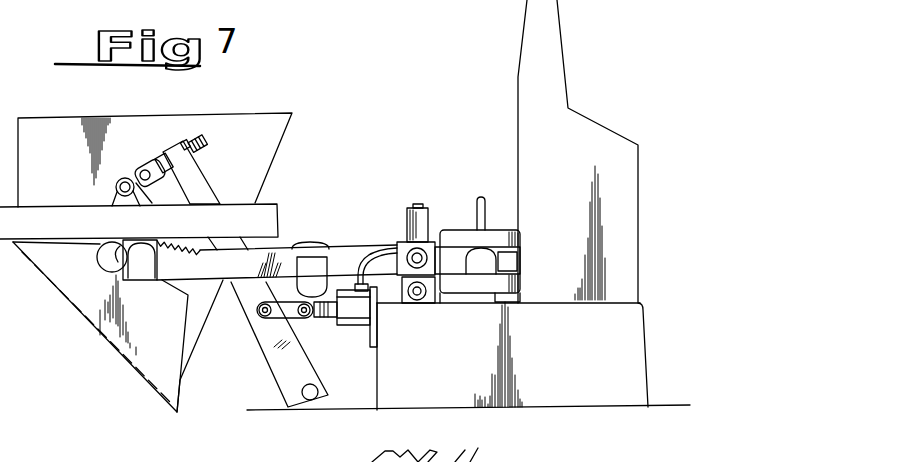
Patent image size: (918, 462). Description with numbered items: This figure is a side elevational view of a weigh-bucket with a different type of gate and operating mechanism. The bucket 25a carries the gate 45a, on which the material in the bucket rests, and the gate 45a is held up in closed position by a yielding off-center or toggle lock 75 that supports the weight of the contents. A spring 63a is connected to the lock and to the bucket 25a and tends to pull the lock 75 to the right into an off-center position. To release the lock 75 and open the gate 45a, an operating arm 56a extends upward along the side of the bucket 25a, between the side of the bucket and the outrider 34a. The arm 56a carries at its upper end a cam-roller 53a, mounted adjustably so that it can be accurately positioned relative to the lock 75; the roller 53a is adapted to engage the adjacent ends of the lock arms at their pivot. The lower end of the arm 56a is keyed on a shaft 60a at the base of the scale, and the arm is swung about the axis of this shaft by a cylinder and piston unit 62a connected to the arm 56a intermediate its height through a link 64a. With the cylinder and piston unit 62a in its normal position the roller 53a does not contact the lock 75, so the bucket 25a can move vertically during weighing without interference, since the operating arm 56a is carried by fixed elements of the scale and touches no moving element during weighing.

The bucket 25a is at (168, 107).
The outrider 34a is at (277, 204).
The gate 45a is at (168, 343).
The cam-roller 53a is at (146, 163).
The operating arm 56a is at (288, 366).
The shaft 60a is at (310, 399).
The cylinder and piston unit 62a is at (355, 331).
The spring 63a is at (158, 243).
The link 64a is at (270, 313).
The toggle lock 75 is at (106, 196).